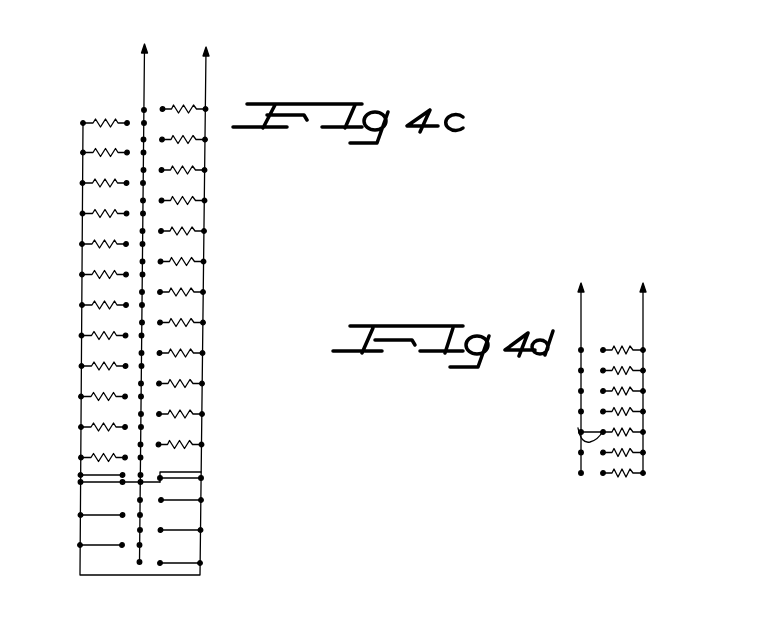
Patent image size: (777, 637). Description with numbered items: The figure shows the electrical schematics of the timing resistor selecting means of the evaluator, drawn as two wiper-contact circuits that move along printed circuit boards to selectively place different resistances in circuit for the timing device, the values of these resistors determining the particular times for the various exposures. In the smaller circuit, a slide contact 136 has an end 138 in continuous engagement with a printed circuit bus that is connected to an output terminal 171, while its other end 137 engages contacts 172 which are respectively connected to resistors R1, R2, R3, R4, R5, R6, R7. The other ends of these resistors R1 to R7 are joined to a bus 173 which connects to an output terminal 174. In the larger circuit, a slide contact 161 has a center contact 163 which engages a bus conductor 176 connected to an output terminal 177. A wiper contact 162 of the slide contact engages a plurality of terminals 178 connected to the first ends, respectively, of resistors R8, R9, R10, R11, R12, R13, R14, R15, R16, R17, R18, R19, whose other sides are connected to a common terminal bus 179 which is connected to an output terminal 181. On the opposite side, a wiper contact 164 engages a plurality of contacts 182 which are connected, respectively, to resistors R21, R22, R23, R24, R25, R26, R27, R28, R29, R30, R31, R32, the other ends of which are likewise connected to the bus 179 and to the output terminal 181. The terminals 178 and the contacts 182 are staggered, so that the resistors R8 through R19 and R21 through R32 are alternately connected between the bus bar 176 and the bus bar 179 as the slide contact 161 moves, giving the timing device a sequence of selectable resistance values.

In FIG. 4c, the resistor R8 is at (107, 117).
In FIG. 4c, the resistor R9 is at (97, 149).
In FIG. 4c, the resistor R10 is at (97, 180).
In FIG. 4c, the resistor R11 is at (97, 210).
In FIG. 4c, the resistor R12 is at (97, 241).
In FIG. 4c, the resistor R13 is at (97, 271).
In FIG. 4c, the resistor R14 is at (97, 302).
In FIG. 4c, the resistor R15 is at (97, 332).
In FIG. 4c, the resistor R16 is at (97, 363).
In FIG. 4c, the resistor R17 is at (97, 393).
In FIG. 4c, the resistor R18 is at (97, 424).
In FIG. 4c, the resistor R19 is at (97, 454).
In FIG. 4c, the resistor R21 is at (187, 107).
In FIG. 4c, the resistor R22 is at (193, 137).
In FIG. 4c, the resistor R23 is at (193, 168).
In FIG. 4c, the resistor R24 is at (193, 198).
In FIG. 4c, the resistor R25 is at (193, 228).
In FIG. 4c, the resistor R26 is at (193, 259).
In FIG. 4c, the resistor R27 is at (193, 289).
In FIG. 4c, the resistor R28 is at (193, 320).
In FIG. 4c, the resistor R29 is at (193, 350).
In FIG. 4c, the resistor R30 is at (193, 381).
In FIG. 4c, the resistor R31 is at (193, 411).
In FIG. 4c, the resistor R32 is at (193, 441).
In FIG. 4c, the slide contact 161 is at (142, 482).
In FIG. 4c, the wiper contact 162 is at (80, 482).
In FIG. 4c, the center contact 163 is at (140, 475).
In FIG. 4c, the wiper contact 164 is at (201, 477).
In FIG. 4c, the bus conductor 176 is at (147, 114).
In FIG. 4c, the output terminal 177 is at (144, 46).
In FIG. 4c, the terminals 178 is at (132, 104).
In FIG. 4c, the common terminal bus 179 is at (155, 576).
In FIG. 4c, the output terminal 181 is at (206, 49).
In FIG. 4c, the contacts 182 is at (152, 150).
In FIG. 4d, the resistor R1 is at (634, 347).
In FIG. 4d, the resistor R2 is at (634, 368).
In FIG. 4d, the resistor R3 is at (634, 388).
In FIG. 4d, the resistor R4 is at (634, 409).
In FIG. 4d, the resistor R5 is at (634, 429).
In FIG. 4d, the resistor R6 is at (634, 450).
In FIG. 4d, the resistor R7 is at (634, 470).
In FIG. 4d, the slide contact 136 is at (590, 443).
In FIG. 4d, the other end of contact 137 is at (600, 426).
In FIG. 4d, the end of slide contact 138 is at (600, 432).
In FIG. 4d, the output terminal 171 is at (603, 257).
In FIG. 4d, the contacts 172 is at (606, 316).
In FIG. 4d, the bus 173 is at (645, 327).
In FIG. 4d, the output terminal 174 is at (643, 285).